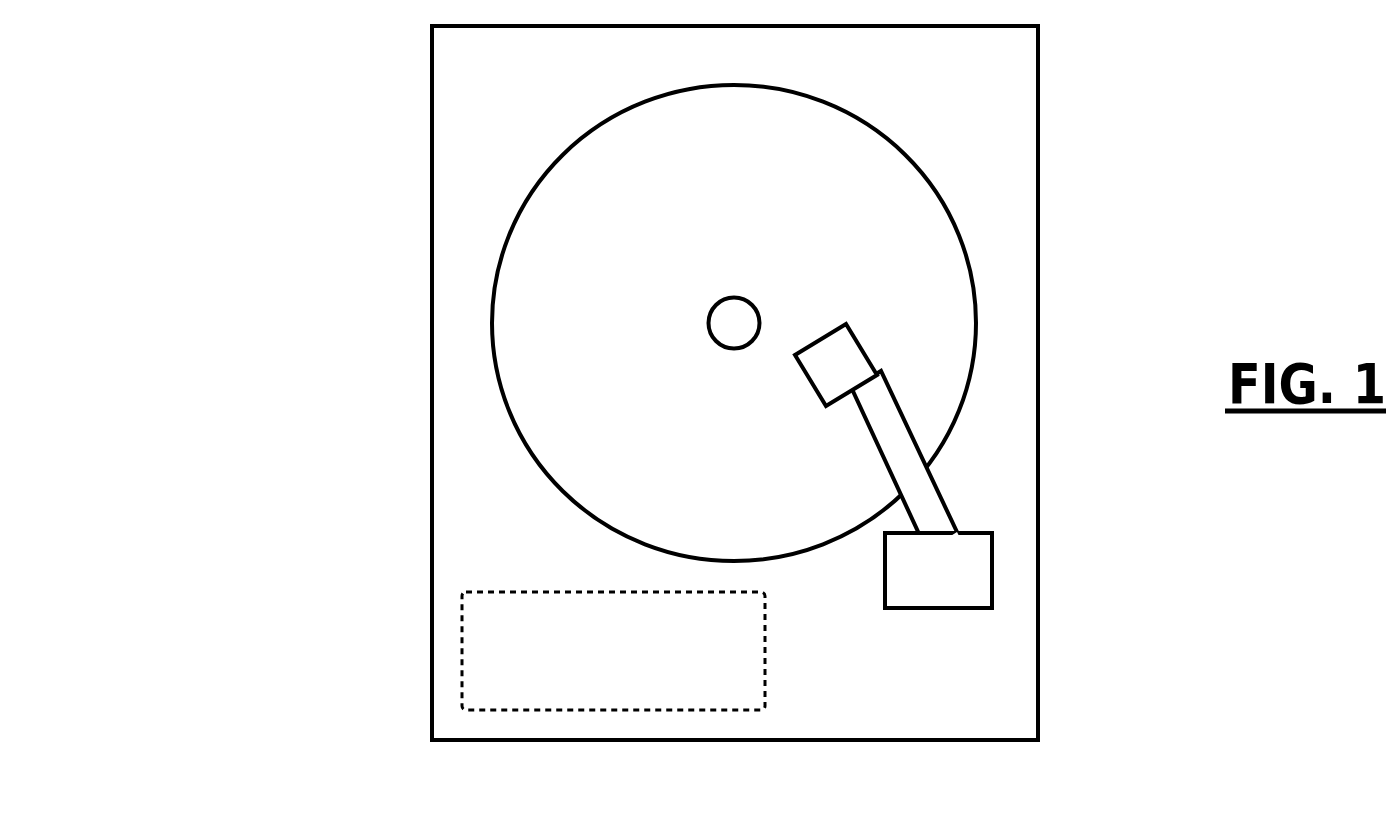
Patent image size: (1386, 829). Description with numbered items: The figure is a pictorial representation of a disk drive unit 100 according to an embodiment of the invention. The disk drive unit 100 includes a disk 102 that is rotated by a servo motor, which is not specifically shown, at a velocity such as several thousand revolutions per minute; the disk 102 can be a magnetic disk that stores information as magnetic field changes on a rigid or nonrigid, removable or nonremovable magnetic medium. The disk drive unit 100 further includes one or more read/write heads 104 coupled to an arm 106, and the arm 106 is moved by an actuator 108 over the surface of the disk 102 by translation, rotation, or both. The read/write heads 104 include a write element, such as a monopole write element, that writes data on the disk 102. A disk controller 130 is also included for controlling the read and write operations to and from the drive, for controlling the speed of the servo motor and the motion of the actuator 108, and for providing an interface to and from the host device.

The disk drive unit 100 is at (362, 410).
The disk 102 is at (578, 137).
The read/write head 104 is at (868, 360).
The arm 106 is at (905, 450).
The actuator 108 is at (885, 588).
The disk controller 130 is at (613, 651).